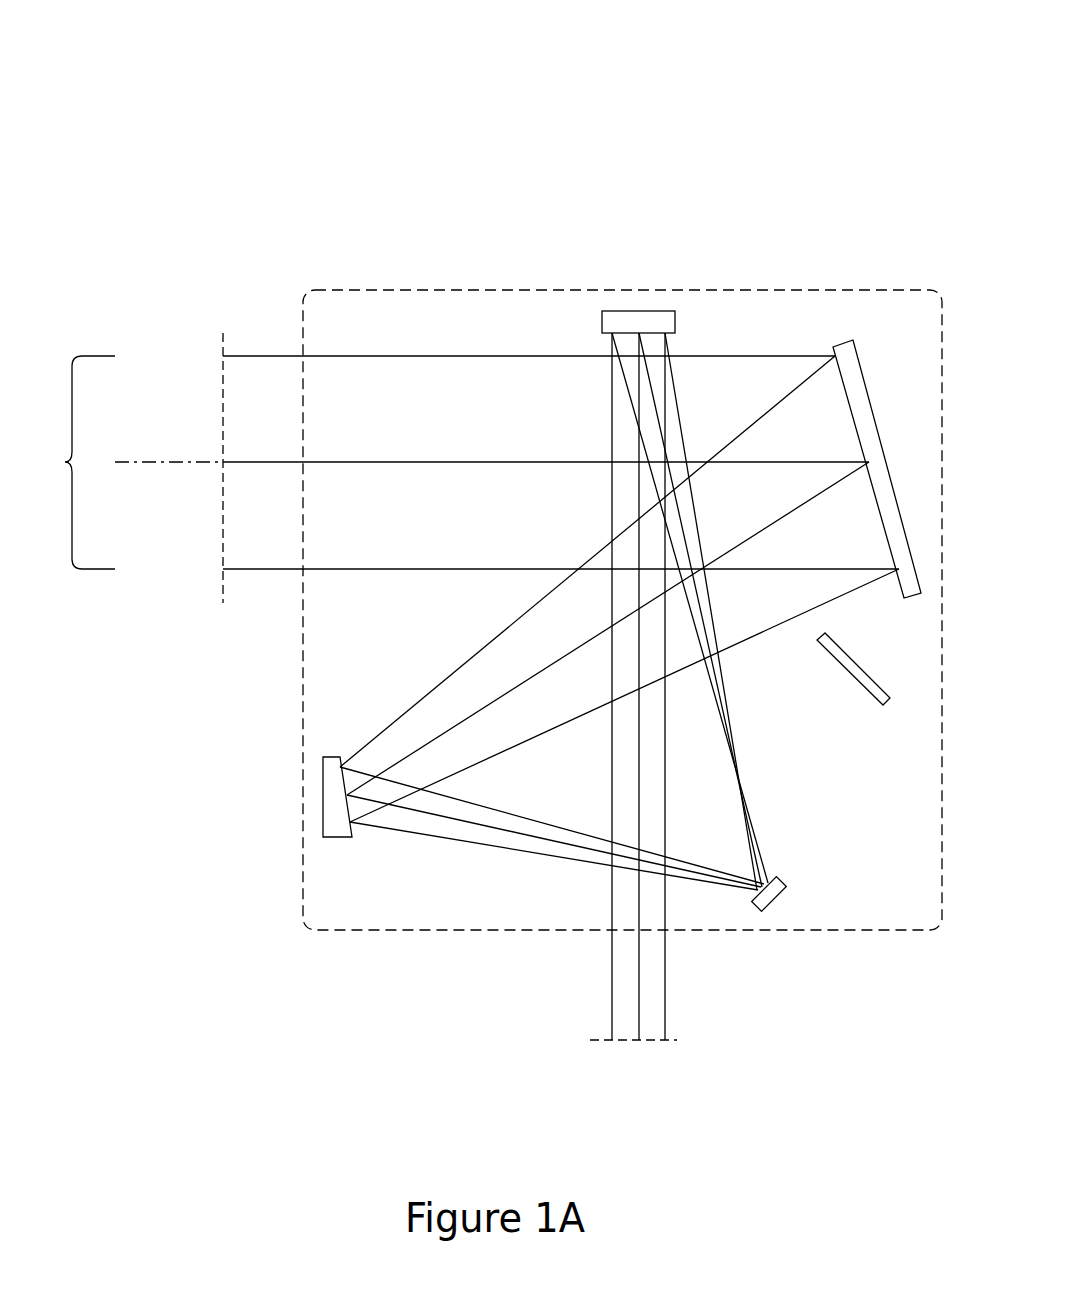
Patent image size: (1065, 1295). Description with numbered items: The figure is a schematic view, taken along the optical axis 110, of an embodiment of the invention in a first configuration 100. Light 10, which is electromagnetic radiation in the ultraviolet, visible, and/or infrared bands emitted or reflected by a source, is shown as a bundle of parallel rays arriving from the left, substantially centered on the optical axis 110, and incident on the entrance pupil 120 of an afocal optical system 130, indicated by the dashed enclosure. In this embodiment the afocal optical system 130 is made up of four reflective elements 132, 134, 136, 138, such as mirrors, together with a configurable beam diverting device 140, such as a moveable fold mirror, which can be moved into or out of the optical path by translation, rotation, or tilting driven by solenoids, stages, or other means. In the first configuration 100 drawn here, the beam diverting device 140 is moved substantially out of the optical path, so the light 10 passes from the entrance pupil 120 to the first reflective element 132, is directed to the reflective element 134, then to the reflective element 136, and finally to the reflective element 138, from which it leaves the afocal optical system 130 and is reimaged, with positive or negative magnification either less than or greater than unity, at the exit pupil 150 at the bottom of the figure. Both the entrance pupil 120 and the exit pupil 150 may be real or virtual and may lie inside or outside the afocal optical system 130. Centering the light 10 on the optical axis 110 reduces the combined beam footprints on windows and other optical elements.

The first configuration 100 is at (104, 71).
The light 10 is at (65, 462).
The optical axis 110 is at (170, 464).
The entrance pupil 120 is at (223, 333).
The afocal optical system 130 is at (411, 290).
The reflective element 132 is at (857, 363).
The reflective element 134 is at (340, 840).
The reflective element 136 is at (780, 904).
The reflective element 138 is at (602, 331).
The configurable beam diverting device 140 is at (848, 678).
The exit pupil 150 is at (680, 1040).